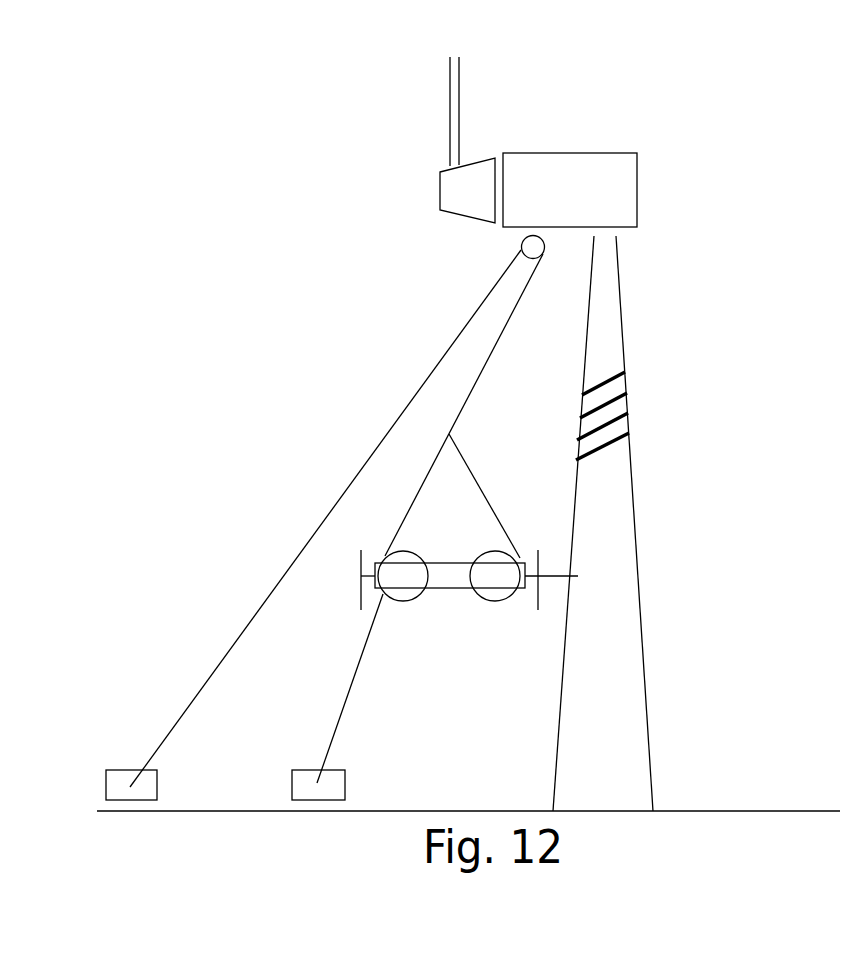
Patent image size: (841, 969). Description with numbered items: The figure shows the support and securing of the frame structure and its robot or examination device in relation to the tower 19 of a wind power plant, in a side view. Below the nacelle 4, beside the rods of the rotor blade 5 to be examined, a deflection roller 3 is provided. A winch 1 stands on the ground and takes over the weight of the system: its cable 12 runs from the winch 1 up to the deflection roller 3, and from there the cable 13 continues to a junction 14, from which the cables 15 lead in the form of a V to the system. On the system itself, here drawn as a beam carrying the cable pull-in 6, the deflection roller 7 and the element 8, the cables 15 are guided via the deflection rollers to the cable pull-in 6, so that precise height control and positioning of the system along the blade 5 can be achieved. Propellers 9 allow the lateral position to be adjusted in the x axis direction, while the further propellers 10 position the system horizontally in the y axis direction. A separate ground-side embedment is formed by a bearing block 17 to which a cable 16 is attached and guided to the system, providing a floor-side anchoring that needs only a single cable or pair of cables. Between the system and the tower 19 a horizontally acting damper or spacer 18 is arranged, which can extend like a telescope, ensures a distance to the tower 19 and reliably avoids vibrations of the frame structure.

The winch 1 is at (121, 770).
The deflection roller 3 is at (521, 243).
The nacelle 4 is at (626, 152).
The rotor blade 5 is at (449, 90).
The cable pull-in 6 is at (477, 538).
The deflection roller 7 is at (477, 538).
The load 8 is at (520, 555).
The propellers 9 is at (359, 612).
The further propellers 10 is at (403, 602).
The cable 12 is at (342, 483).
The cables 13 is at (504, 350).
The junction 14 is at (450, 430).
The cables 15 is at (430, 480).
The cables 16 is at (342, 725).
The bearing block 17 is at (348, 787).
The damper, spacer, or stabilizer 18 is at (578, 570).
The tower 19 is at (637, 502).